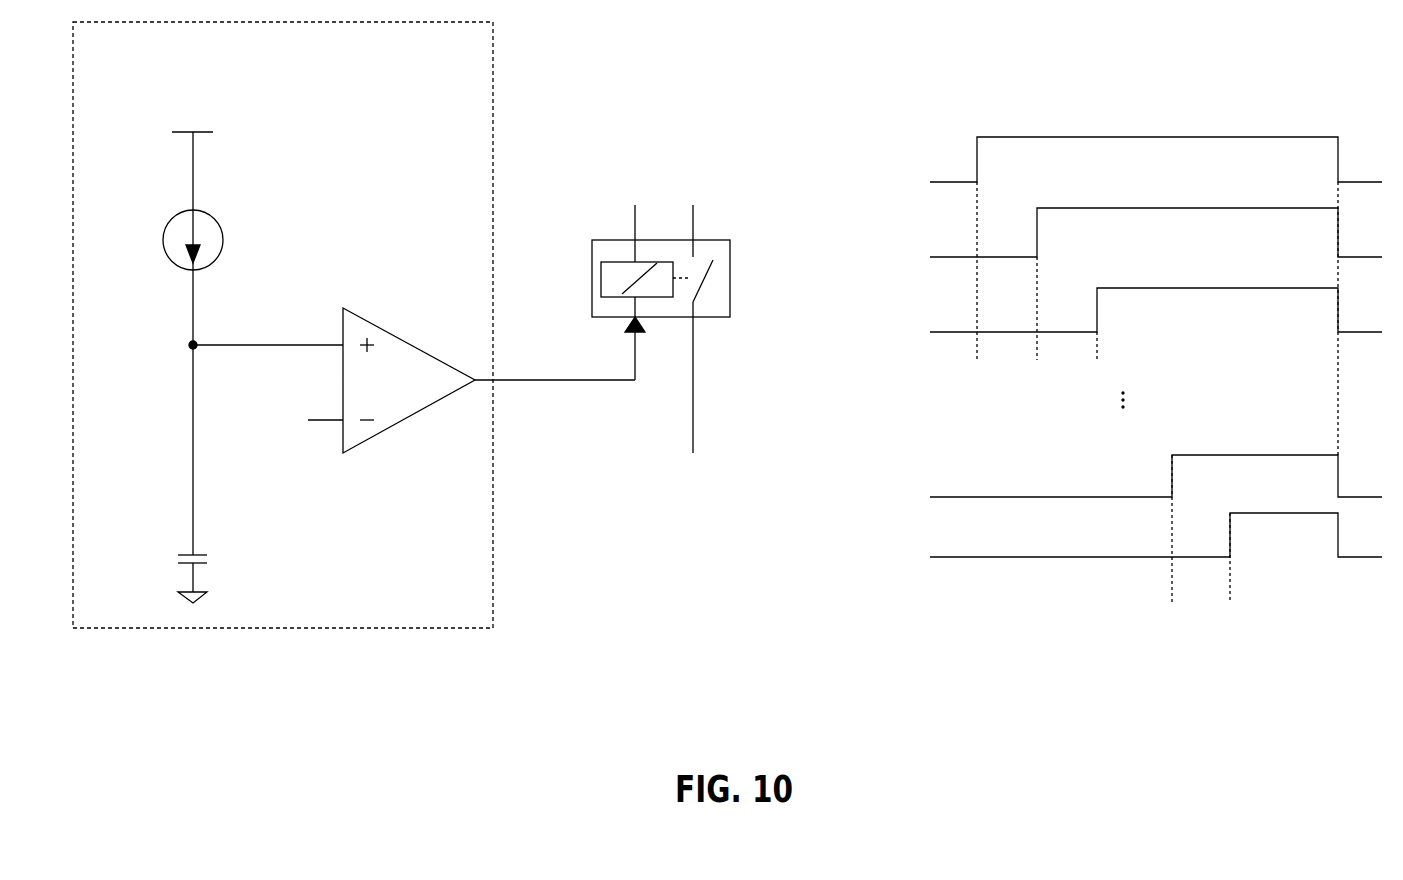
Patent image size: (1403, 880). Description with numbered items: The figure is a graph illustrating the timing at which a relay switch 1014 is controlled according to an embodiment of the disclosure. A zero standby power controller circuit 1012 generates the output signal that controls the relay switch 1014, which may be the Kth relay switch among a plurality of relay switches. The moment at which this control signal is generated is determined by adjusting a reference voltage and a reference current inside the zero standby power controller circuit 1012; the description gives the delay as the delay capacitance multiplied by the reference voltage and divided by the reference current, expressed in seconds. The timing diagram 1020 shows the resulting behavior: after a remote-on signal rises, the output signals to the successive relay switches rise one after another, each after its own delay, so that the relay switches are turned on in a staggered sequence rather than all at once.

The zero standby power controller circuit 1012 is at (367, 107).
The relay switch 1014 is at (728, 240).
The timing diagram 1020 is at (1182, 729).